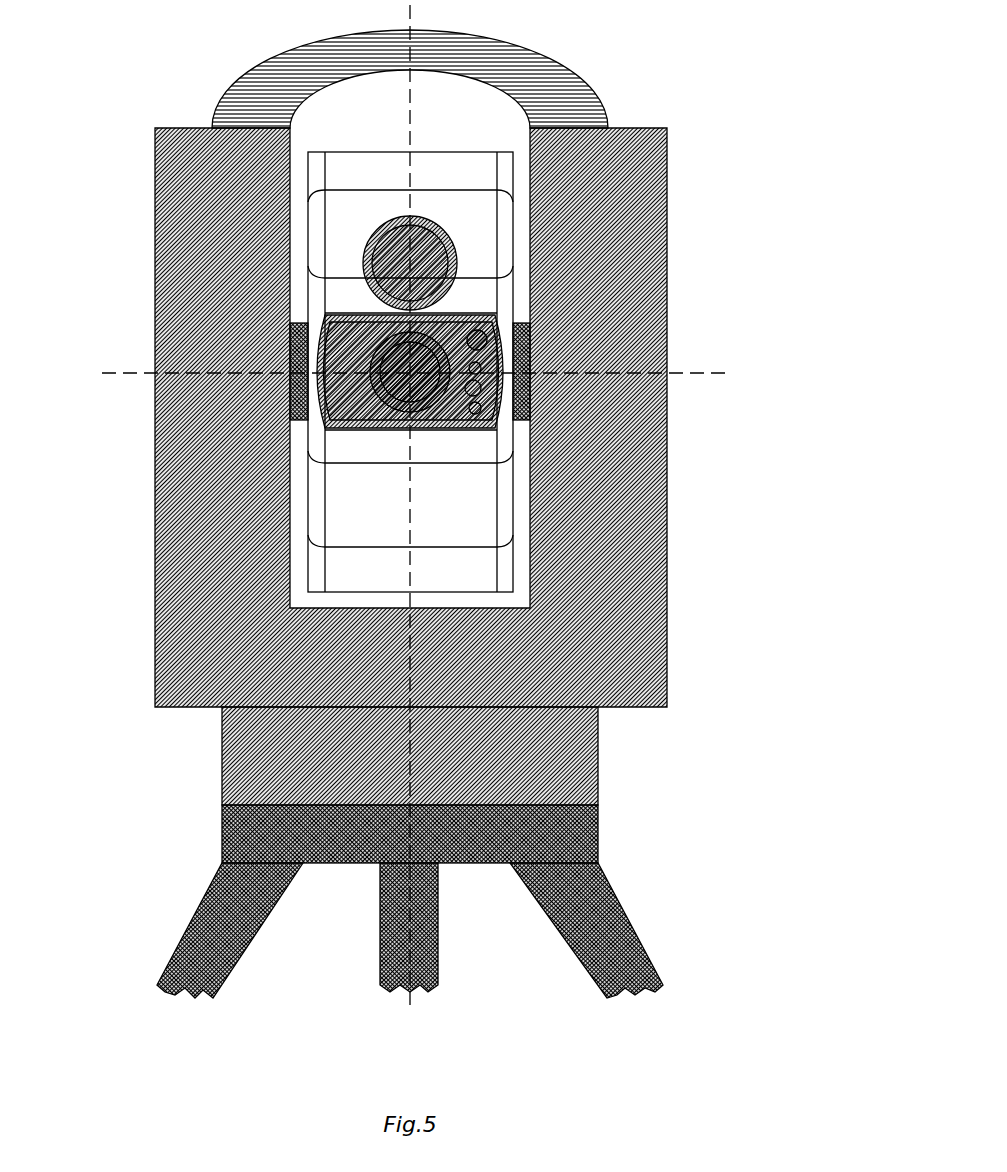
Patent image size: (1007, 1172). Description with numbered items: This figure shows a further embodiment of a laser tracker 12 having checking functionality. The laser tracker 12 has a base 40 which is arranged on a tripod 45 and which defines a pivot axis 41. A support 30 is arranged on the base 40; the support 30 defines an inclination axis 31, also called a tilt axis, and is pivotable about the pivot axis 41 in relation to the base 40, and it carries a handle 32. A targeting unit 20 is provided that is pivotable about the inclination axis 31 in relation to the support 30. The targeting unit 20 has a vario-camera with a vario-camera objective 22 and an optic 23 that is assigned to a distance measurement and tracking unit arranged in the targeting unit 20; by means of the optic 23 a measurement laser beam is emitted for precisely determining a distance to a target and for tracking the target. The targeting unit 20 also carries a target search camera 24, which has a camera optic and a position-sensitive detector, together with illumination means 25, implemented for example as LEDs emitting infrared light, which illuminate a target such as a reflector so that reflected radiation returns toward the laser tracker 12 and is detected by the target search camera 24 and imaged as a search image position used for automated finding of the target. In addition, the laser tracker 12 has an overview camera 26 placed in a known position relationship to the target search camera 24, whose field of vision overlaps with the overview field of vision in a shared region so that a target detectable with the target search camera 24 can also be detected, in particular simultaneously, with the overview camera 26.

The laser tracker 12 is at (145, 42).
The targeting unit 20 is at (333, 220).
The vario-camera objective 22 is at (393, 267).
The optic 23 is at (390, 387).
The target search camera 24 is at (481, 391).
The illumination means 25 is at (481, 371).
The overview camera 26 is at (485, 335).
The support 30 is at (643, 213).
The inclination axis 31 is at (676, 373).
The handle 32 is at (575, 92).
The base 40 is at (250, 780).
The pivot axis 41 is at (407, 108).
The tripod 45 is at (220, 842).